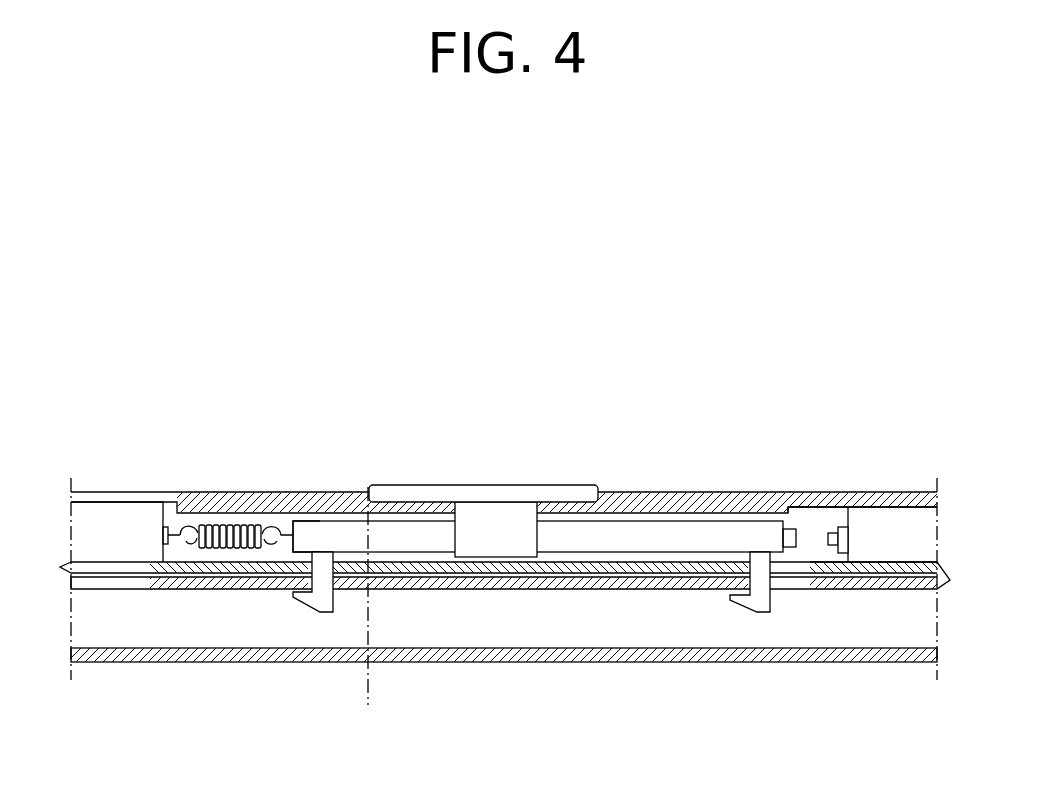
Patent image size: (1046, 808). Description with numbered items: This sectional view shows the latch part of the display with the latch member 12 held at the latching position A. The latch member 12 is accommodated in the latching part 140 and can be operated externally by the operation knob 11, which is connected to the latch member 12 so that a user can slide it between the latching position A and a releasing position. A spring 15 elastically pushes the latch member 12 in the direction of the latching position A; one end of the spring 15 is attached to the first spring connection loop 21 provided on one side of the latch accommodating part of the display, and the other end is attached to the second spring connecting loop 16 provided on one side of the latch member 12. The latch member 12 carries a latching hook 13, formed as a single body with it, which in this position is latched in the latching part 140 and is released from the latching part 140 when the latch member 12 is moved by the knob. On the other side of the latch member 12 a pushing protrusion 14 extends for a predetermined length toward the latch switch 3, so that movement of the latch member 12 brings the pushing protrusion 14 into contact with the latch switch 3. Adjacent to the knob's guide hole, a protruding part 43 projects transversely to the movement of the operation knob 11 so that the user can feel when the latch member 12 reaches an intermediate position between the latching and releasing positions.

The latch switch 3 is at (843, 527).
The operation knob 11 is at (498, 485).
The latch member 12 is at (713, 535).
The latching hook 13 is at (762, 618).
The pushing protrusion 14 is at (790, 526).
The spring 15 is at (237, 520).
The second spring connecting loop 16 is at (293, 522).
The first spring connection loop 21 is at (181, 482).
The protruding part 43 is at (615, 493).
The latching part 140 is at (802, 596).
The latching position A is at (369, 609).